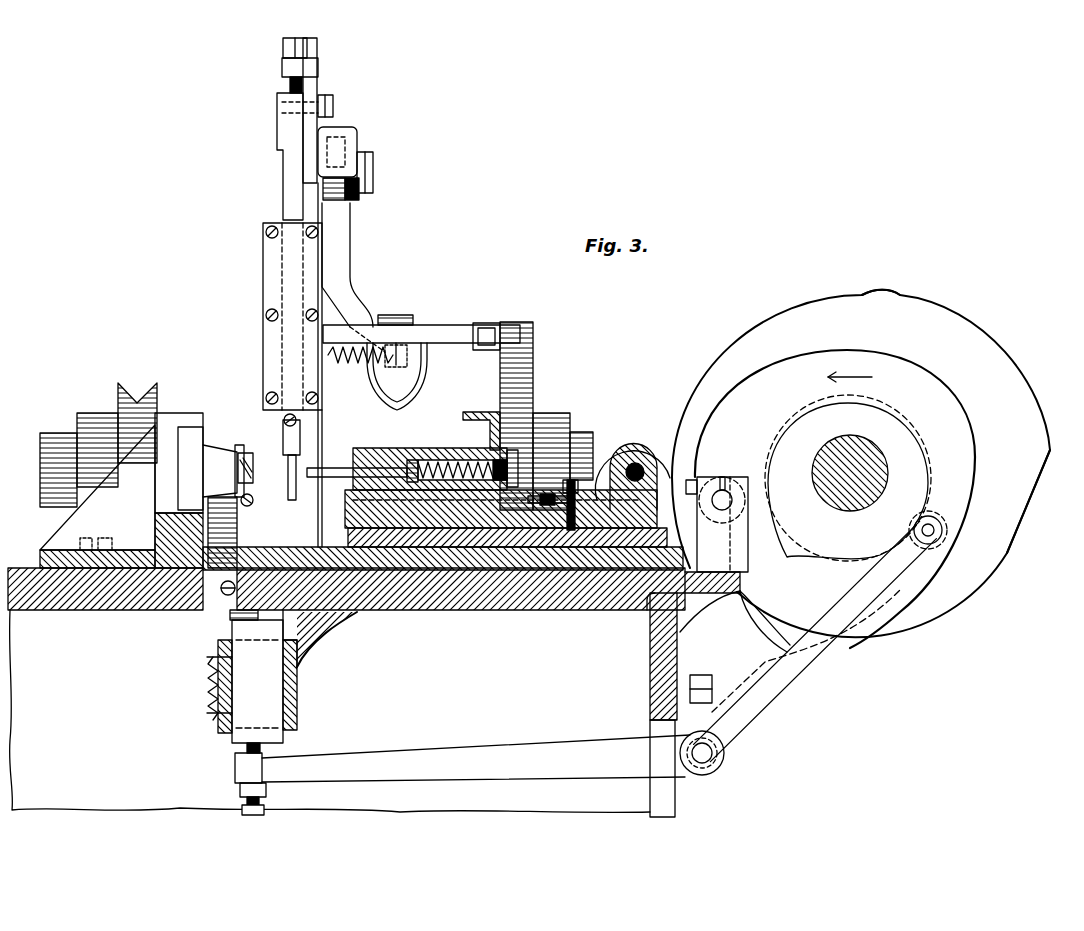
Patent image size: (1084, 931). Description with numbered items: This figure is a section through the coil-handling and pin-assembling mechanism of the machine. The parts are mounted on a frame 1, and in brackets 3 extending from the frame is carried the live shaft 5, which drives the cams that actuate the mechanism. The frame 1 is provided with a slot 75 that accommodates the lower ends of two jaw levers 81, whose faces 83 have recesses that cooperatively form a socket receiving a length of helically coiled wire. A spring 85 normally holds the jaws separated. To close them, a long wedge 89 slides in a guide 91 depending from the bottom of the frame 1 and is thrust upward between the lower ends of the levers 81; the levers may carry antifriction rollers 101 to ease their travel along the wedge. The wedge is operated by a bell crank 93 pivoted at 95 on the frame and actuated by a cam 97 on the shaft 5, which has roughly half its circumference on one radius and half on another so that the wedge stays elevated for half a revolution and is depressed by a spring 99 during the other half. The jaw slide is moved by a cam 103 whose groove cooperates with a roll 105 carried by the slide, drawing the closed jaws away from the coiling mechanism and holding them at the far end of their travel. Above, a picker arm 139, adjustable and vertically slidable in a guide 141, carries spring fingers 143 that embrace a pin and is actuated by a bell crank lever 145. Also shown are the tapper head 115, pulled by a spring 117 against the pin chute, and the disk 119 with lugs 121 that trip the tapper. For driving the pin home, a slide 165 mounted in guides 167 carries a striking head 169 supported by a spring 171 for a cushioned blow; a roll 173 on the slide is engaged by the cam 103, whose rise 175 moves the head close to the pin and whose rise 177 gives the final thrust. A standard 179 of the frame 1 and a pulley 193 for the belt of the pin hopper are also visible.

The frame 1 is at (526, 598).
The brackets 3 is at (746, 656).
The live shaft 5 is at (863, 457).
The slot 75 is at (304, 596).
The jaw levers 81 is at (228, 497).
The faces of the jaws 83 is at (246, 452).
The spring 85 is at (225, 597).
The wedge 89 is at (283, 691).
The guide 91 is at (333, 641).
The bell crank 93 is at (435, 757).
The pivot 95 is at (726, 759).
The cam 97 is at (928, 479).
The spring 99 is at (206, 689).
The antifriction rollers 101 is at (230, 621).
The cam 103 is at (680, 418).
The roll 105 is at (728, 477).
The head 115 is at (345, 337).
The spring 117 is at (351, 366).
The disk 119 is at (533, 353).
The lugs 121 is at (476, 323).
The picker arm 139 is at (288, 186).
The guide 141 is at (263, 275).
The spring fingers 143 is at (296, 441).
The bell crank lever 145 is at (352, 244).
The slide 165 is at (495, 448).
The guides 167 is at (532, 496).
The striking head 169 is at (345, 468).
The spring 171 is at (429, 456).
The roll 173 is at (621, 440).
The rise 175 is at (904, 290).
The rise 177 is at (1052, 447).
The standard 179 is at (316, 53).
The pulley 193 is at (137, 398).